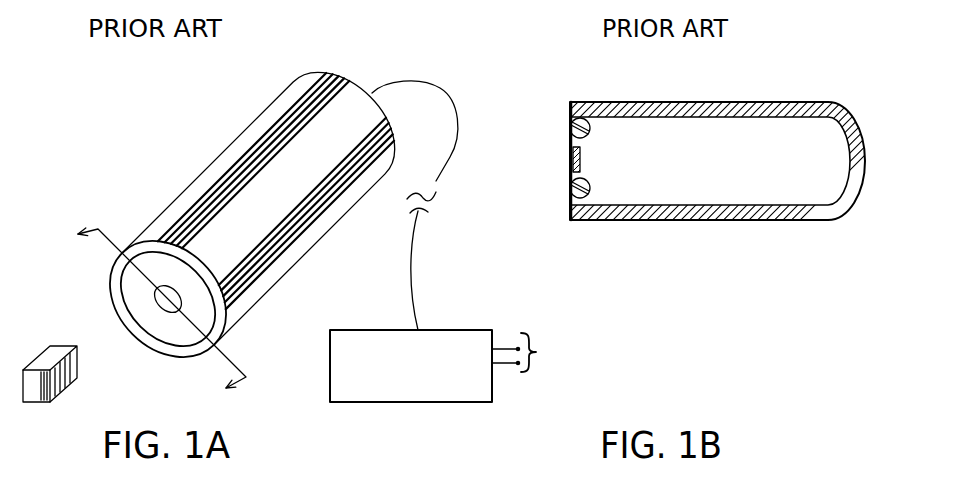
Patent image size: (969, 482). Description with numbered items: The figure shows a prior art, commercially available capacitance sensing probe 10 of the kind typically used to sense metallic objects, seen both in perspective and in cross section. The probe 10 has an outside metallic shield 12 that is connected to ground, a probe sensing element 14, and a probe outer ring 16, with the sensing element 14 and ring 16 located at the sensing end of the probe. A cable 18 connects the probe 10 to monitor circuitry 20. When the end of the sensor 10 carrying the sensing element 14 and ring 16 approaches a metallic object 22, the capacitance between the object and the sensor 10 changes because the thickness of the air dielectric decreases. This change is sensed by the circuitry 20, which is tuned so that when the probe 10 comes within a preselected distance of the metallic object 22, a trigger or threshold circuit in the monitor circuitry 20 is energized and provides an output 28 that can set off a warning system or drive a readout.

In FIG. 1A, the capacitance sensing probe 10 is at (158, 186).
In FIG. 1B, the capacitance sensing probe 10 is at (809, 78).
In FIG. 1A, the outside metallic shield 12 is at (310, 250).
In FIG. 1B, the outside metallic shield 12 is at (853, 194).
In FIG. 1A, the probe sensing element 14 is at (173, 316).
In FIG. 1B, the probe sensing element 14 is at (572, 159).
In FIG. 1A, the probe outer ring 16 is at (122, 302).
In FIG. 1B, the probe outer ring 16 is at (570, 127).
In FIG. 1A, the cable 18 is at (446, 186).
In FIG. 1A, the monitor circuitry 20 is at (458, 330).
In FIG. 1A, the metallic object 22 is at (66, 379).
In FIG. 1A, the output 28 is at (552, 365).